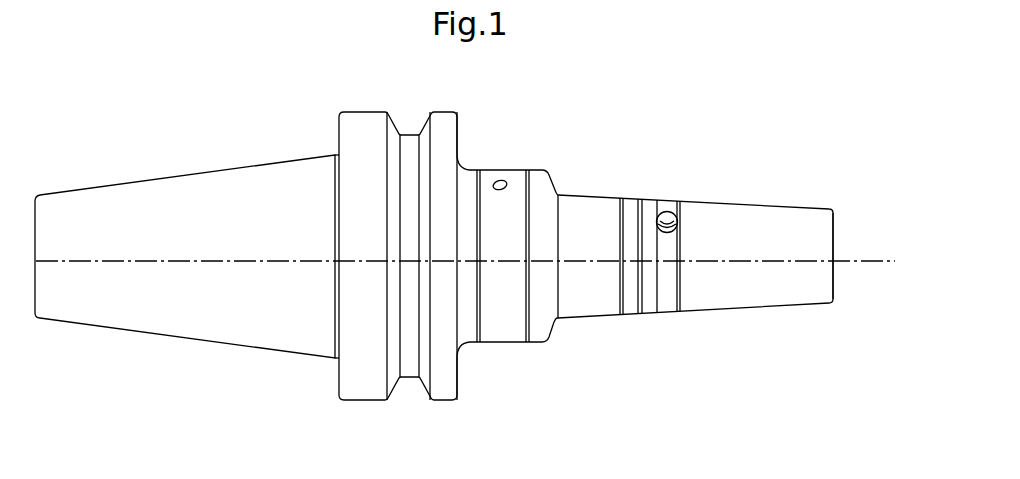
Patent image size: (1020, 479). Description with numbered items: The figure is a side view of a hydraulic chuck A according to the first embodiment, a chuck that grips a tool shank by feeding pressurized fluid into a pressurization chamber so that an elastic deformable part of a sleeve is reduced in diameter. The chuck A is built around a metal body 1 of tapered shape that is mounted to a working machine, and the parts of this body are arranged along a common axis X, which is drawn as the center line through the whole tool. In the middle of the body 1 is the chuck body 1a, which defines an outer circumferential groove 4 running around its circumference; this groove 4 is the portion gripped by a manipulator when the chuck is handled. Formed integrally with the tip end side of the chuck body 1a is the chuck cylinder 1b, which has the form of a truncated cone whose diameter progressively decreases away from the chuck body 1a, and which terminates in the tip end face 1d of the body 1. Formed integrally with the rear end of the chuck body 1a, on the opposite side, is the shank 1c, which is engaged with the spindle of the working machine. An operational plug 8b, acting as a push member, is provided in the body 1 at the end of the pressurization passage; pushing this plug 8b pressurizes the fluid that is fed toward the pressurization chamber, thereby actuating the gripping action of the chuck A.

The hydraulic chuck A is at (457, 260).
The body 1 is at (457, 260).
The chuck body 1a is at (391, 260).
The chuck cylinder 1b is at (749, 263).
The shank 1c is at (181, 326).
The tip end face 1d is at (835, 283).
The outer circumferential groove 4 is at (407, 147).
The operational plug 8b is at (506, 181).
The axis X is at (477, 263).